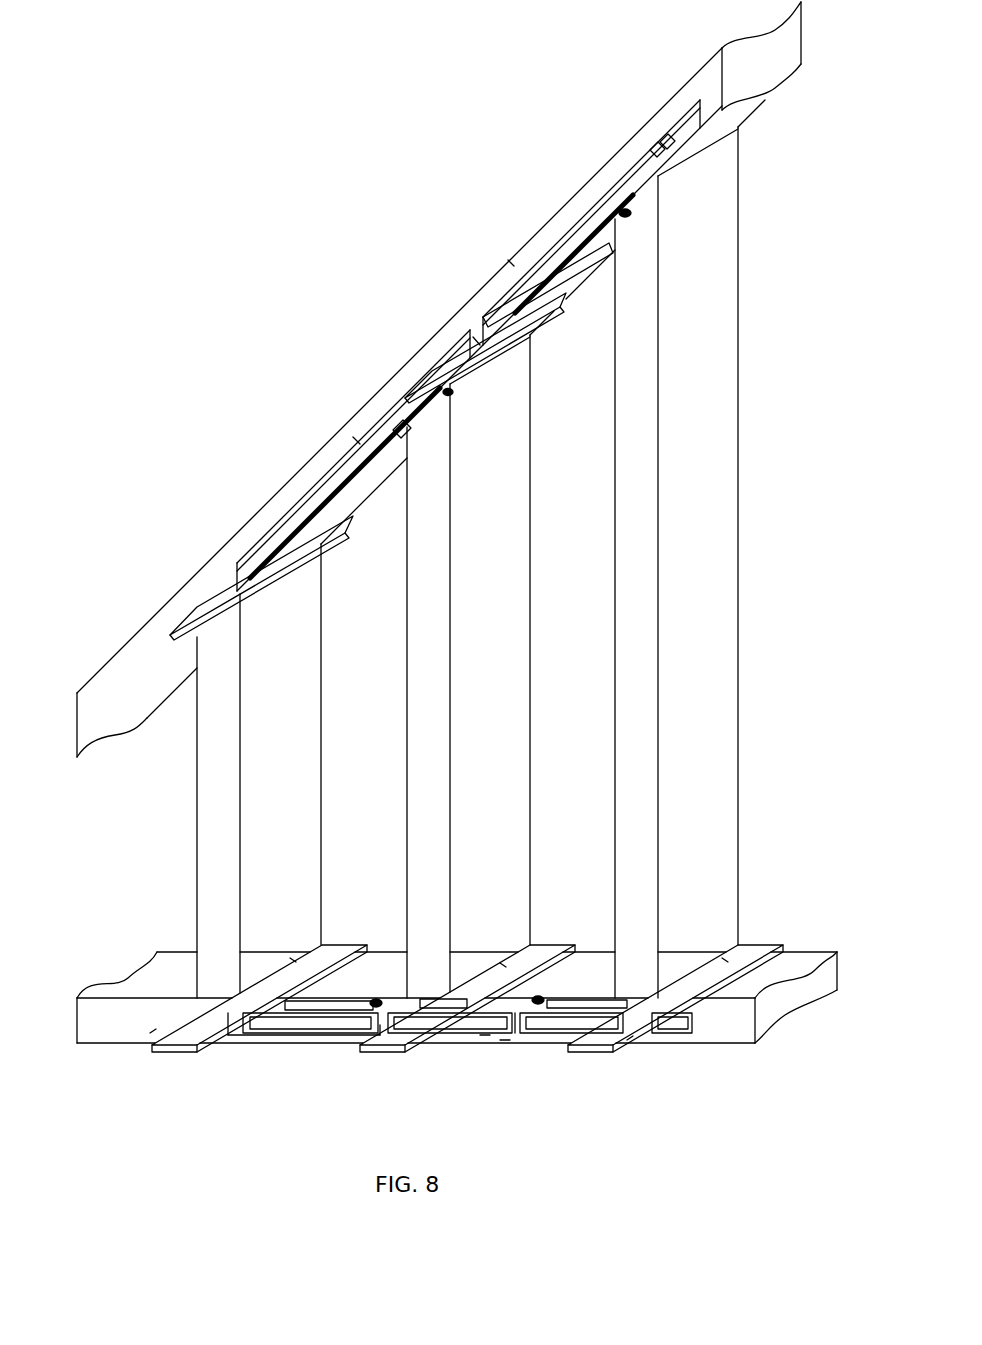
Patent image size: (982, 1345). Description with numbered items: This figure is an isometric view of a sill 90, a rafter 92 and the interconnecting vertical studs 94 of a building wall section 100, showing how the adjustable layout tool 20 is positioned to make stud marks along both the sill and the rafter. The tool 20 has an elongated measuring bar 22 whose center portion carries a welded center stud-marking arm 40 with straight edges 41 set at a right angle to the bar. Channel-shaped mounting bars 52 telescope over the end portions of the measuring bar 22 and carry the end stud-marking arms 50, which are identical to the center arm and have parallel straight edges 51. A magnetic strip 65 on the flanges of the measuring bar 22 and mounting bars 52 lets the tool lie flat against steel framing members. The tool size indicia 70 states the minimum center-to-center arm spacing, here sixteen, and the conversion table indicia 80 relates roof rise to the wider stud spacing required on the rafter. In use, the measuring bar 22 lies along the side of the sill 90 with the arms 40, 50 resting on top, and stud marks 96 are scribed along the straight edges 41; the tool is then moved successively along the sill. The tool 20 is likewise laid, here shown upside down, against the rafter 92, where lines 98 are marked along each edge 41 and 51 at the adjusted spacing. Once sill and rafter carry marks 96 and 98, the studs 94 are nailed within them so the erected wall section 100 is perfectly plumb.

The adjustable layout tool 20 is at (353, 437).
The measuring bar 22 is at (473, 337).
The center stud-marking arm 40 is at (435, 345).
The straight edges 41 is at (380, 1025).
The end stud-marking arms 50 is at (637, 140).
The straight edges 51 is at (150, 1033).
The mounting bars 52 is at (577, 218).
The magnetic strip 65 is at (583, 228).
The tool size indicia 70 is at (530, 998).
The conversion table indicia 80 is at (449, 392).
The sill 90 is at (95, 1043).
The rafter 92 is at (508, 260).
The studs 94 is at (740, 722).
The stud marks 96 is at (290, 958).
The stud marks on rafter 98 is at (715, 138).
The wall section 100 is at (748, 253).